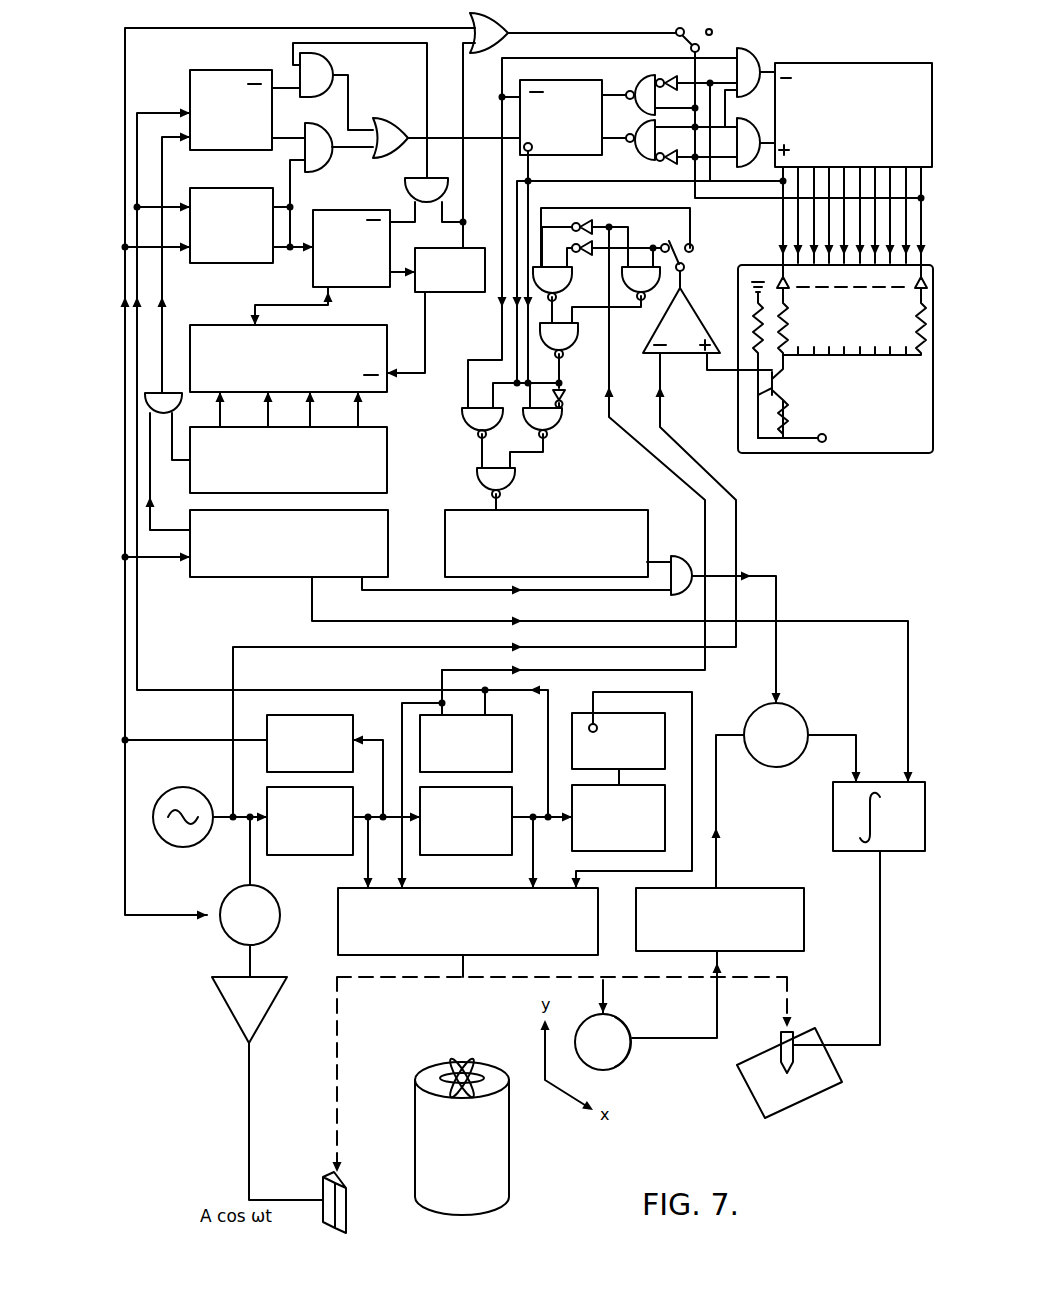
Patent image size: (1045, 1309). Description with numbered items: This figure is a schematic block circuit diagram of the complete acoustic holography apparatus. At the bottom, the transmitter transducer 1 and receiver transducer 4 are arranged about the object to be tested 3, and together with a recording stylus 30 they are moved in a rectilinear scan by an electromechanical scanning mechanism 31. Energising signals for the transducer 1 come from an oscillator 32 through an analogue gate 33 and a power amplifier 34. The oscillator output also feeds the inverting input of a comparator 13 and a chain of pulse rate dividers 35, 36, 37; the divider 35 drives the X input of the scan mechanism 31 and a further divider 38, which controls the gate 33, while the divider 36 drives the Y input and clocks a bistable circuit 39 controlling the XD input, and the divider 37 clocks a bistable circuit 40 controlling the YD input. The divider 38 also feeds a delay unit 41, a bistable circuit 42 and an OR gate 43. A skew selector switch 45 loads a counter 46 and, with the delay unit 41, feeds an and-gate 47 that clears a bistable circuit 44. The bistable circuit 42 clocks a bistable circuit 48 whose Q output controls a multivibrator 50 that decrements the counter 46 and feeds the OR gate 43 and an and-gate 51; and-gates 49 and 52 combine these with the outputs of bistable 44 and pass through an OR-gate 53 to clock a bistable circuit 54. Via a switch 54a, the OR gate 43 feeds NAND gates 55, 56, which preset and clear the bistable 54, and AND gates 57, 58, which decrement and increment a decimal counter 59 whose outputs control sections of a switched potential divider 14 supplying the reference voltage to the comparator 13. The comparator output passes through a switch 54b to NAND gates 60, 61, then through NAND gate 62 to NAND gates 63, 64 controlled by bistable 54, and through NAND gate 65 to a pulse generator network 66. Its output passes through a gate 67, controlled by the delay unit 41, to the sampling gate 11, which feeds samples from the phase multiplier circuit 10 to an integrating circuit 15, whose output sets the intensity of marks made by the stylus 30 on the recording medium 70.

The acoustic transmitter transducer 1 is at (347, 1204).
The object to be tested 3 is at (502, 1157).
The receiver transducer 4 is at (622, 1065).
The phase multiplier circuit 10 is at (728, 888).
The sampling gate circuit 11 is at (795, 708).
The comparator circuit 13 is at (693, 300).
The switched potential divider network 14 is at (872, 455).
The integrating circuit 15 is at (833, 806).
The recording stylus 30 is at (780, 1047).
The electromechanical scanning mechanism 31 is at (335, 929).
The oscillator 32 is at (173, 784).
The analogue gate 33 is at (218, 930).
The power amplifier 34 is at (232, 1003).
The pulse rate divider 35 is at (312, 856).
The pulse rate divider 36 is at (478, 856).
The pulse rate divider 37 is at (572, 847).
The pulse rate divider 38 is at (353, 731).
The bistable circuit 39 is at (512, 732).
The bistable circuit 40 is at (665, 727).
The delay unit 41 is at (270, 578).
The bistable circuit 42 is at (216, 190).
The OR gate 43 is at (498, 28).
The bistable circuit 44 is at (193, 72).
The skew selector switch 45 is at (388, 478).
The counter 46 is at (220, 325).
The and-gate 47 is at (182, 405).
The bistable circuit 48 is at (313, 274).
The and-gate 49 is at (318, 168).
The multivibrator circuit 50 is at (461, 293).
The and-gate 51 is at (405, 186).
The and-gate 52 is at (333, 67).
The OR-gate 53 is at (378, 122).
The bistable circuit 54 is at (570, 80).
The switch 54a is at (677, 26).
The switch 54b is at (684, 257).
The NAND gate 55 is at (642, 78).
The NAND gate 56 is at (638, 150).
The AND gate 57 is at (758, 61).
The AND gate 58 is at (747, 122).
The decimal counter 59 is at (847, 63).
The NAND gate 60 is at (630, 293).
The NAND gate 61 is at (570, 286).
The NAND gate 62 is at (566, 352).
The NAND gate 63 is at (470, 430).
The NAND gate 64 is at (562, 429).
The NAND gate 65 is at (515, 481).
The pulse generator network 66 is at (607, 508).
The gate 67 is at (677, 556).
The recording medium 70 is at (752, 1096).